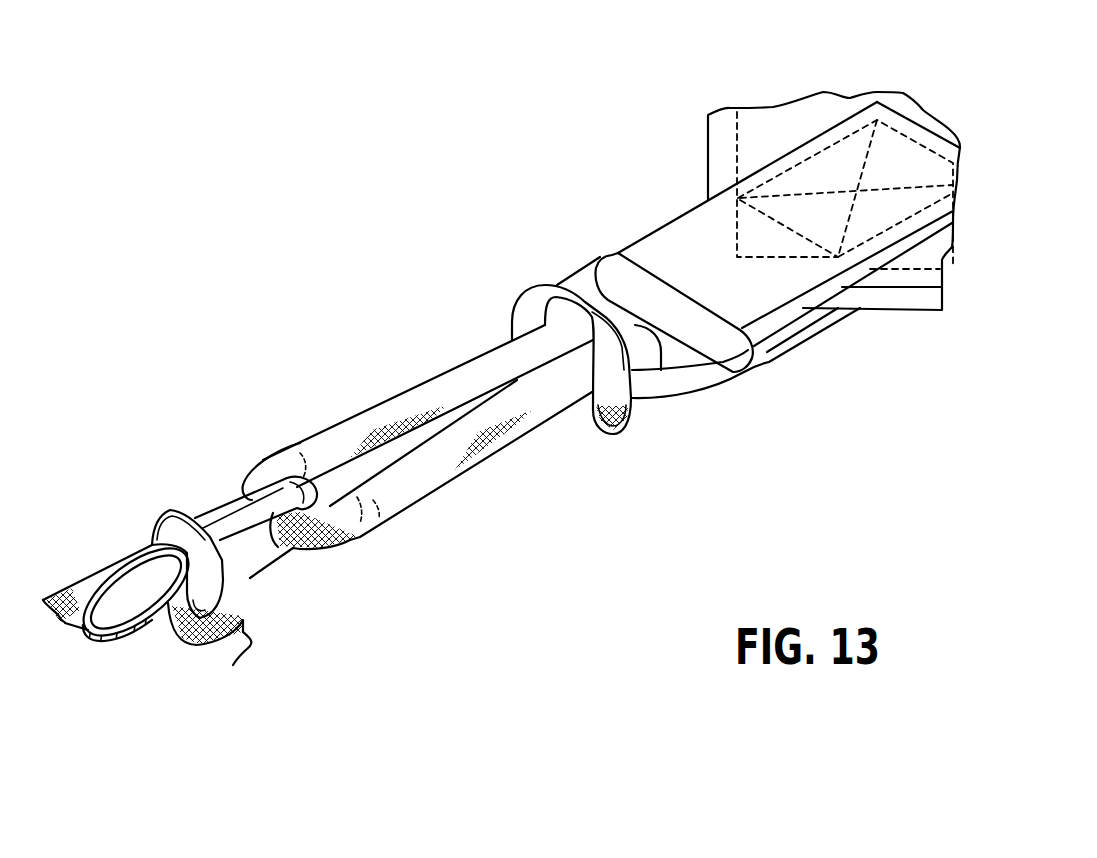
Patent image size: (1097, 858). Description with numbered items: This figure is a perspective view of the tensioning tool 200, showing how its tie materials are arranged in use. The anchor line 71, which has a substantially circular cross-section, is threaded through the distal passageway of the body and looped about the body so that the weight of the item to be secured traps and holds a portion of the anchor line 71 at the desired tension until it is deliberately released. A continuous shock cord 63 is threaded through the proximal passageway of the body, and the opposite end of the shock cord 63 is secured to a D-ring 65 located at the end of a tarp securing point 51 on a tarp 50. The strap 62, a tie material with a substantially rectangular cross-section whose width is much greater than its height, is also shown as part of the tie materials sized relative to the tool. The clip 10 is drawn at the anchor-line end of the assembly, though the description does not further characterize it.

The tarp 50 is at (722, 132).
The tarp securing point 51 is at (853, 177).
The strap 62 is at (662, 237).
The shock cord 63 is at (345, 427).
The D-ring 65 is at (707, 390).
The clip 10 is at (263, 560).
The anchor line 71 is at (63, 587).
The tensioning tool 200 is at (147, 672).